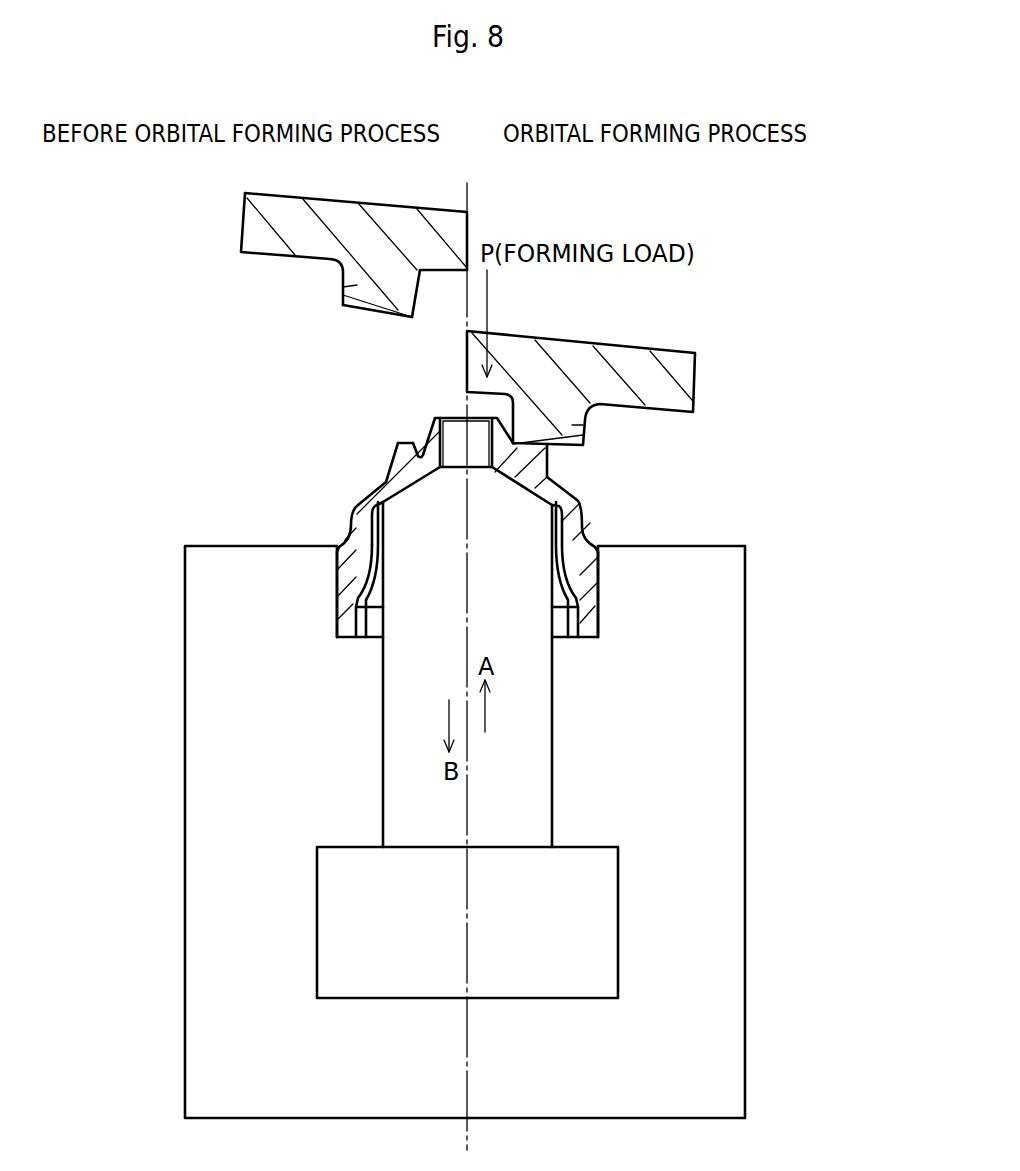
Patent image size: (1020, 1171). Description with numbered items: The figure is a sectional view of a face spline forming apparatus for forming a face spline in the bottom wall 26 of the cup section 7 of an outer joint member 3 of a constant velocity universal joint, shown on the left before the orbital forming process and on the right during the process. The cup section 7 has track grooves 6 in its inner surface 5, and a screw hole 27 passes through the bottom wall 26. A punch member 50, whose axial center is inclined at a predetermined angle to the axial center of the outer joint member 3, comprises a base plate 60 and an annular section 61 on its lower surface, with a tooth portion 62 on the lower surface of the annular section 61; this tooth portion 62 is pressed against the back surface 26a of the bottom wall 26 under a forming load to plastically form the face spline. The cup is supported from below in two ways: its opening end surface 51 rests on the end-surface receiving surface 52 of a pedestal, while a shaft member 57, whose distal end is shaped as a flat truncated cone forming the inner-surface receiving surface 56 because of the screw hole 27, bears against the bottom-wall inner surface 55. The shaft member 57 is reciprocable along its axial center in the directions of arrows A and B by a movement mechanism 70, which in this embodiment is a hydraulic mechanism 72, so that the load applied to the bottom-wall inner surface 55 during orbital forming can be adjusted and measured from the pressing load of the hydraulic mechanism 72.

The outer joint member 3 is at (348, 481).
The inner surface 5 is at (373, 582).
The track grooves 6 is at (579, 577).
The cup section 7 is at (344, 528).
The bottom wall 26 is at (539, 470).
The back surface 26a is at (405, 440).
The screw hole 27 is at (443, 440).
The punch member 50 is at (245, 219).
The opening end surface 51 is at (348, 638).
The end-surface receiving surface 52 is at (352, 617).
The bottom-wall inner surface 55 is at (420, 488).
The inner-surface receiving surface 56 is at (396, 478).
The shaft member 57 is at (534, 702).
The base plate 60 is at (258, 242).
The annular section 61 is at (358, 285).
The tooth portion 62 is at (365, 312).
The movement mechanism 70 is at (598, 898).
The hydraulic mechanism 72 is at (598, 937).